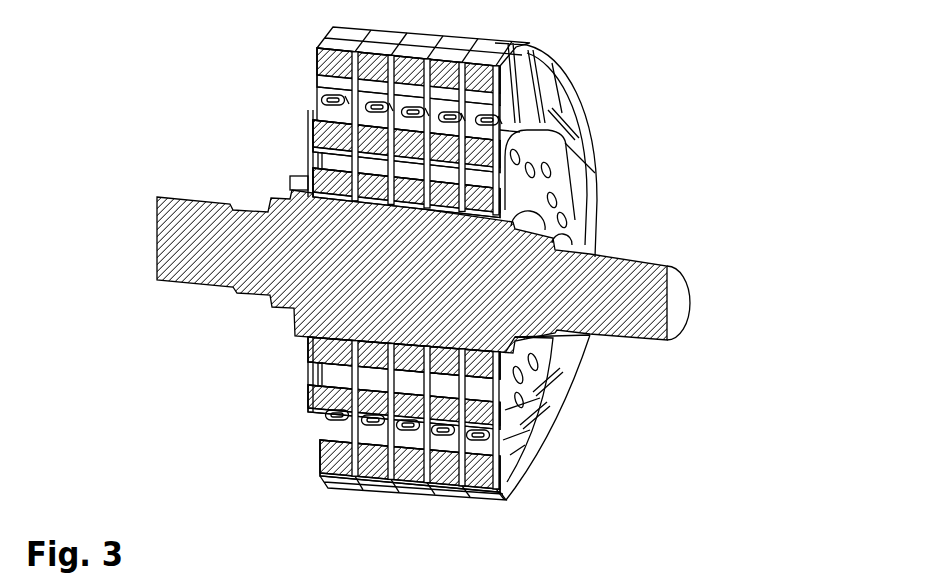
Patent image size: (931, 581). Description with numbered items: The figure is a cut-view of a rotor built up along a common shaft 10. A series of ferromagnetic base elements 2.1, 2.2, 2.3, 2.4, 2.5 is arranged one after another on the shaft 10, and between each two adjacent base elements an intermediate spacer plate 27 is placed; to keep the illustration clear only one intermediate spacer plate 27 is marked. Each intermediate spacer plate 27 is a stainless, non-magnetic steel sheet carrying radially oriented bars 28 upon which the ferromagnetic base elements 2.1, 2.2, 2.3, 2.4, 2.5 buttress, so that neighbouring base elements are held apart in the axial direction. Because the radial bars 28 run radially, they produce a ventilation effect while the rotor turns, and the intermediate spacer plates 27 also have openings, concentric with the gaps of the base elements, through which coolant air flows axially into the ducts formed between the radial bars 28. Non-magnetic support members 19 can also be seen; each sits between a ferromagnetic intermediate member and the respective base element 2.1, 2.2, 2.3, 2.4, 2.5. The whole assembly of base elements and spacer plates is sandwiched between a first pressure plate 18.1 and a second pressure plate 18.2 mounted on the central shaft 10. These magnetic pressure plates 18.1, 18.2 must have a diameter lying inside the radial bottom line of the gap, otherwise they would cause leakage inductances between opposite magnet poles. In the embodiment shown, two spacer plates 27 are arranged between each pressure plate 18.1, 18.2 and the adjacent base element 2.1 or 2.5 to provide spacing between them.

The ferromagnetic base element 2.1 is at (328, 127).
The ferromagnetic base element 2.2 is at (323, 108).
The ferromagnetic base element 2.3 is at (322, 88).
The ferromagnetic base element 2.4 is at (548, 113).
The ferromagnetic base element 2.5 is at (505, 156).
The shaft 10 is at (237, 279).
The first pressure plate 18.1 is at (313, 380).
The second pressure plate 18.2 is at (575, 200).
The non-magnetic support member 19 is at (323, 433).
The intermediate spacer plate 27 is at (540, 420).
The radial bar 28 is at (570, 368).